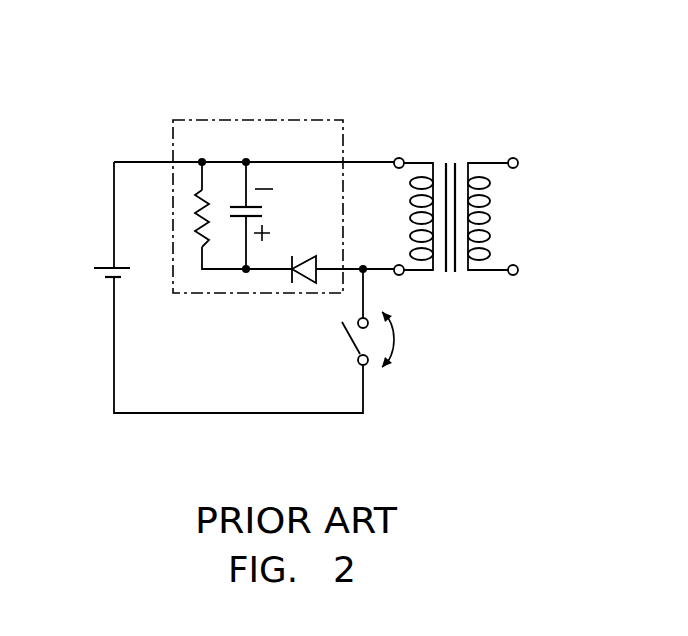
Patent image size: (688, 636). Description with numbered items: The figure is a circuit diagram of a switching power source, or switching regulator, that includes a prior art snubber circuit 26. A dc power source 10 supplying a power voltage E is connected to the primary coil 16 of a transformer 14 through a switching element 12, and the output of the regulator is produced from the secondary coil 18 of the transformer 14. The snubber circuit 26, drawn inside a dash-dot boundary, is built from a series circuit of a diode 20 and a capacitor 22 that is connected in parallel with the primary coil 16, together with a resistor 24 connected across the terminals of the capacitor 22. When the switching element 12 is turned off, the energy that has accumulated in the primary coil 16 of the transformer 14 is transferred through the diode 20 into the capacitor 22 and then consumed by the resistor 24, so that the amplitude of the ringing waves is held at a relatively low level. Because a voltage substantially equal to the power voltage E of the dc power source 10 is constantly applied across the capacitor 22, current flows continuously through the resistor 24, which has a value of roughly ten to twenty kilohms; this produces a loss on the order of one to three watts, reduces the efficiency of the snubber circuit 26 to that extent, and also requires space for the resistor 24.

The dc power source 10 is at (105, 270).
The switching element 12 is at (348, 343).
The transformer 14 is at (455, 145).
The primary coil 16 is at (421, 162).
The secondary coil 18 is at (490, 200).
The diode 20 is at (307, 283).
The capacitor 22 is at (235, 215).
The resistor 24 is at (197, 218).
The snubber circuit 26 is at (219, 118).